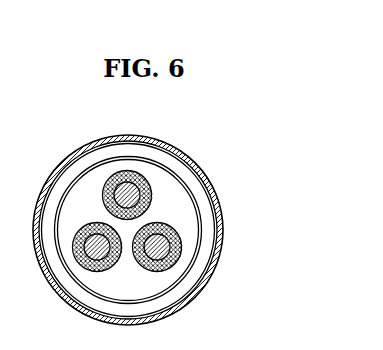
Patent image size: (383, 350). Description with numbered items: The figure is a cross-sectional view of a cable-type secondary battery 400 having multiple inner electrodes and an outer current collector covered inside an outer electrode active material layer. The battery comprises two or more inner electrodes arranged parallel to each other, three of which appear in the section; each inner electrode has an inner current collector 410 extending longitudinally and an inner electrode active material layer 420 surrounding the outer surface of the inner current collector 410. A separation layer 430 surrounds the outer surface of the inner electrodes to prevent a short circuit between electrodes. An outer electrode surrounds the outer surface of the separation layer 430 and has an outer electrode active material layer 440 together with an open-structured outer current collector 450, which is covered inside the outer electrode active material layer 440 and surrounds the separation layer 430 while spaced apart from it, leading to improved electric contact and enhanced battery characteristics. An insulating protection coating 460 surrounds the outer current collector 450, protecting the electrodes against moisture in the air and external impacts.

The cable-type secondary battery 400 is at (213, 138).
The inner current collector 410 is at (120, 185).
The inner electrode active material layer 420 is at (126, 183).
The separation layer 430 is at (185, 194).
The outer electrode active material layer 440 is at (199, 204).
The outer current collector 450 is at (207, 213).
The protection coating 460 is at (221, 239).